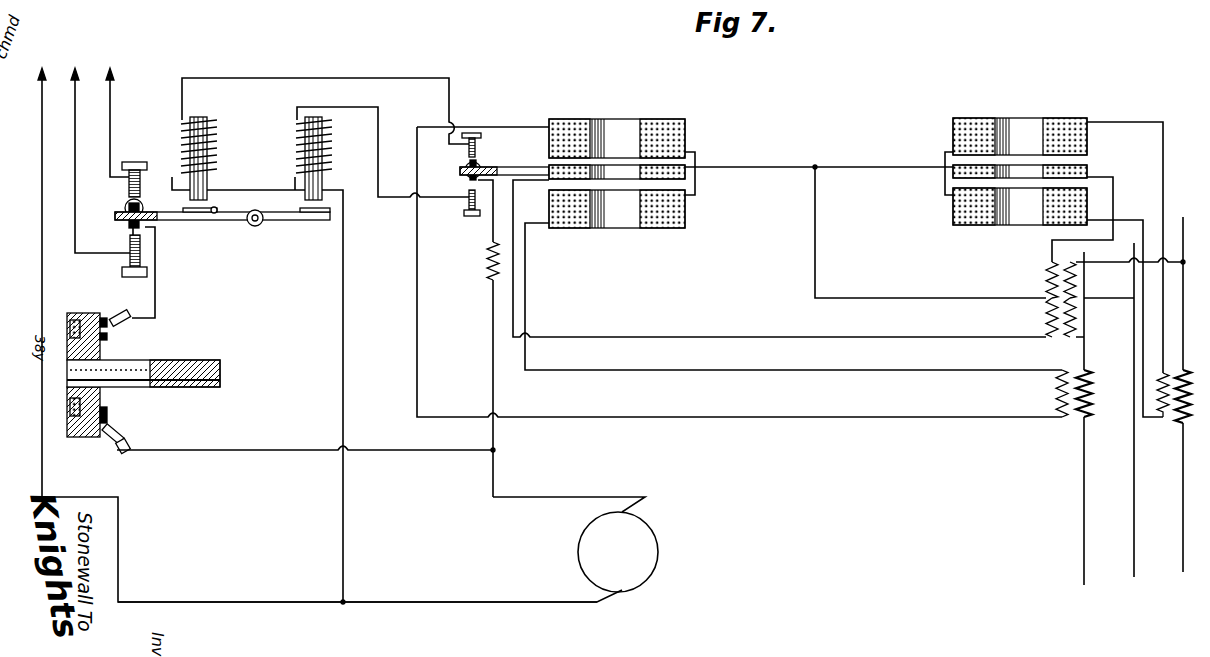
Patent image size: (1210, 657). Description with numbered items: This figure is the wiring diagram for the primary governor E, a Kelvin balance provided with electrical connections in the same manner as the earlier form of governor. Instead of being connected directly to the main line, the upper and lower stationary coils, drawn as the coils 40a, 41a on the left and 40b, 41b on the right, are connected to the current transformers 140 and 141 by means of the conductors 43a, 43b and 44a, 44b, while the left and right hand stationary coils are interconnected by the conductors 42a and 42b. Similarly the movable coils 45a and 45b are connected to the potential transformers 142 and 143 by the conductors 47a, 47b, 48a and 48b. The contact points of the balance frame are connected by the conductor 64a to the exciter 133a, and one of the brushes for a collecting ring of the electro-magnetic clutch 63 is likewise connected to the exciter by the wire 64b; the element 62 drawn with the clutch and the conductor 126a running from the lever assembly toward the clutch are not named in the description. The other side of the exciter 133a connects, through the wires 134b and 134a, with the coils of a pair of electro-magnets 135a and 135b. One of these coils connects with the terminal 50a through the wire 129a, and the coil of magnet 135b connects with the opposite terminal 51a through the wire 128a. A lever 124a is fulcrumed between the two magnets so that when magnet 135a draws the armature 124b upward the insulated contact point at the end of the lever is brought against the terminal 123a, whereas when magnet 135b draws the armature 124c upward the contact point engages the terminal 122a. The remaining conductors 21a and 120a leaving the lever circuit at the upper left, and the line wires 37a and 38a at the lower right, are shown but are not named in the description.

The conductor 21a is at (73, 208).
The conductor 120a is at (115, 87).
The wire 129a is at (330, 78).
The wire 128a is at (380, 198).
The wire 134a is at (343, 555).
The wire 134b is at (455, 590).
The exciter 133a is at (660, 575).
The electro-magnet 135a is at (200, 117).
The electro-magnet 135b is at (300, 120).
The terminal 123a is at (165, 143).
The lever 124a is at (118, 204).
The armature 124b is at (215, 222).
The armature 124c is at (330, 212).
The terminal 122a is at (128, 252).
The conductor 126a is at (158, 286).
The electro-magnetic clutch 63 is at (103, 347).
The rod 62 is at (200, 360).
The wire 64b is at (252, 438).
The terminal 50a is at (477, 148).
The terminal 51a is at (467, 220).
The conductor 64a is at (493, 328).
The coil 40a is at (676, 106).
The movable coil 45a is at (700, 175).
The coil 41a is at (672, 226).
The conductor 42a is at (700, 152).
The conductor 47a is at (790, 160).
The conductor 47b is at (826, 247).
The primary governor E is at (864, 115).
The coil 40b is at (1070, 105).
The movable coil 45b is at (953, 172).
The coil 41b is at (956, 222).
The conductor 42b is at (953, 152).
The conductor 44b is at (1141, 110).
The conductor 48b is at (1121, 177).
The conductor 44a is at (1140, 212).
The conductor 48a is at (628, 326).
The conductor 43a is at (764, 361).
The conductor 43b is at (627, 411).
The potential transformer 142 is at (1046, 278).
The potential transformer 143 is at (1046, 318).
The current transformer 140 is at (1056, 398).
The current transformer 141 is at (1177, 405).
The line wire 37a is at (1084, 547).
The line wire 38a is at (1184, 528).